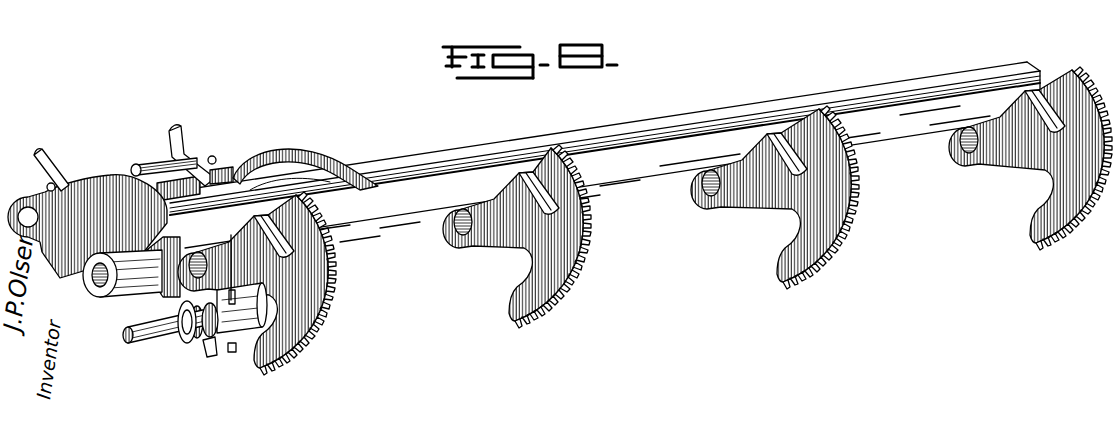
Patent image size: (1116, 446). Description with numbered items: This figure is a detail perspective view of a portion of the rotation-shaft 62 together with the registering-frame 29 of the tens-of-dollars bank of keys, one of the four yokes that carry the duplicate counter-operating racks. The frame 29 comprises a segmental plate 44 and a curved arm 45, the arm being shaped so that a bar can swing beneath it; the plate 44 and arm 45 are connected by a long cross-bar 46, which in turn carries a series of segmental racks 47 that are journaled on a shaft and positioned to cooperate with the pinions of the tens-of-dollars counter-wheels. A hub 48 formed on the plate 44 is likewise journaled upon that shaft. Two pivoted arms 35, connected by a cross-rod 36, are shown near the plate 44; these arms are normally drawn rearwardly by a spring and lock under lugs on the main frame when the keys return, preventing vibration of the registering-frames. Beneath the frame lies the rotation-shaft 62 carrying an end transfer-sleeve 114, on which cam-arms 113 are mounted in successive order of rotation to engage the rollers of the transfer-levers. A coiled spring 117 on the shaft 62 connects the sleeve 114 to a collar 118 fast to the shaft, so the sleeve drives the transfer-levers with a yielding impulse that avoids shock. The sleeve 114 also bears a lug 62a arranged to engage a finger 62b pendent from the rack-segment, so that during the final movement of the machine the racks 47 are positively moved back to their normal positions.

The frame 29 is at (225, 169).
The pivoted arms 35 is at (48, 160).
The cross-rod 36 is at (157, 163).
The segmental plate 44 is at (100, 178).
The curved arm 45 is at (318, 153).
The cross-bar 46 is at (442, 161).
The segmental racks 47 is at (322, 282).
The hub 48 is at (88, 298).
The rotation-shaft 62 is at (124, 330).
The lug 62a is at (264, 300).
The finger 62b is at (231, 256).
The cam-arms 113 is at (210, 358).
The transfer-sleeve 114 is at (233, 346).
The coiled spring 117 is at (203, 340).
The collar 118 is at (178, 312).